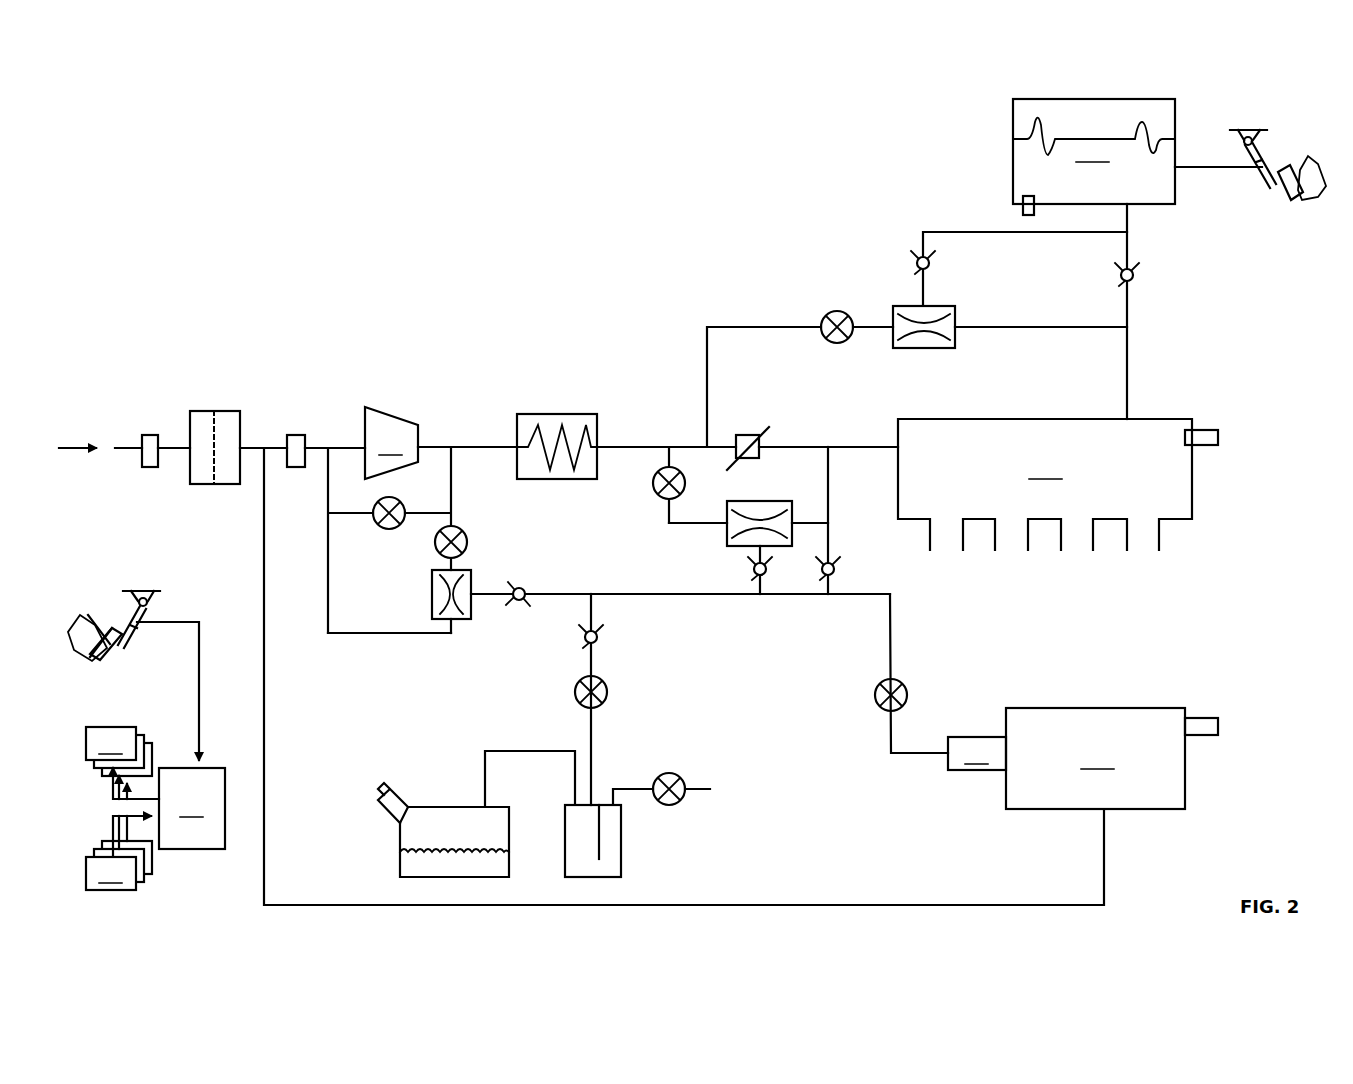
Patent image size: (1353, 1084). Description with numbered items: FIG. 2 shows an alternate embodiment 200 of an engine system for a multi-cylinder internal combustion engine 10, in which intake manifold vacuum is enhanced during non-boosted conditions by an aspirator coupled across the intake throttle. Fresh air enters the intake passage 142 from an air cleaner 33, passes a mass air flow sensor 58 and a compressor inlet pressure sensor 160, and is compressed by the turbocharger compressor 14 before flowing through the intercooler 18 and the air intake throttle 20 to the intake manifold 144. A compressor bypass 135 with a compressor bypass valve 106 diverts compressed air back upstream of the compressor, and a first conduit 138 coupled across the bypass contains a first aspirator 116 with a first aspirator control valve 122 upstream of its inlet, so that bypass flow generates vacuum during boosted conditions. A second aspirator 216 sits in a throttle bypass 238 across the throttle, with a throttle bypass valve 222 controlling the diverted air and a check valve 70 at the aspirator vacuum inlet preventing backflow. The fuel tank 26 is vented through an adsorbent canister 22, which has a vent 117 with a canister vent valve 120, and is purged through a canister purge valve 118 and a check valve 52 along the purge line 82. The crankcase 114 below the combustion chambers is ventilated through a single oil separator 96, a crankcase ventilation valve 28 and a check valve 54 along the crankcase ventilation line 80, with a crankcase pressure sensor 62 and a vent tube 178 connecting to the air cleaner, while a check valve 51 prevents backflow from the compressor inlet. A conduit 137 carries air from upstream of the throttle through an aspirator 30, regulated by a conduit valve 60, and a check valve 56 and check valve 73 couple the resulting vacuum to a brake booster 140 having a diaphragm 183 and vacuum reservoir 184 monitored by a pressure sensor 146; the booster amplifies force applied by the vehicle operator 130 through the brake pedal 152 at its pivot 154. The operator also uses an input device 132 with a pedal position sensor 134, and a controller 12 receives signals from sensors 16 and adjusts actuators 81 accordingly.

The alternate embodiment of engine system 200 is at (166, 315).
The intake passage 142 is at (131, 447).
The mass air flow sensor 58 is at (150, 469).
The air cleaner 33 is at (214, 411).
The compressor inlet pressure sensor 160 is at (293, 469).
The turbocharger compressor 14 is at (441, 443).
The compressor bypass 135 is at (329, 513).
The compressor bypass valve 106 is at (399, 498).
The first aspirator control valve 122 is at (466, 534).
The first aspirator 116 is at (432, 595).
The first conduit 138 is at (360, 634).
The check valve 51 is at (524, 585).
The intercooler 18 is at (538, 413).
The air intake throttle 20 is at (746, 435).
The throttle bypass valve 222 is at (655, 485).
The second aspirator 216 is at (782, 501).
The throttle bypass 238 is at (688, 523).
The check valve 70 is at (752, 569).
The check valve 54 is at (836, 569).
The purge line 82 is at (592, 624).
The check valve 52 is at (600, 637).
The canister purge valve 118 is at (599, 704).
The fuel tank 26 is at (458, 806).
The adsorbent canister 22 is at (622, 868).
The vent 117 is at (697, 789).
The canister vent valve 120 is at (676, 803).
The crankcase ventilation line 80 is at (891, 626).
The crankcase ventilation valve 28 is at (897, 681).
The oil separator 96 is at (977, 753).
The crankcase 114 is at (1095, 758).
The crankcase pressure sensor 62 is at (1200, 718).
The vent tube 178 is at (813, 905).
The intake manifold 144 is at (1045, 377).
The internal combustion engine 10 is at (912, 407).
The conduit 137 is at (740, 328).
The conduit valve 60 is at (838, 311).
The aspirator 30 is at (938, 305).
The check valve 56 is at (914, 262).
The check valve 73 is at (1136, 273).
The pressure sensor 146 is at (1022, 205).
The brake booster 140 is at (1012, 165).
The diaphragm 183 is at (1027, 137).
The vacuum reservoir 184 is at (1093, 151).
The pedal pivot 154 is at (1242, 140).
The vehicle operator 130 is at (1312, 158).
The brake pedal 152 is at (1278, 192).
The pedal position sensor 134 is at (152, 598).
The input device 132 is at (118, 646).
The controller 12 is at (181, 735).
The actuators 81 is at (122, 763).
The sensors 16 is at (119, 853).